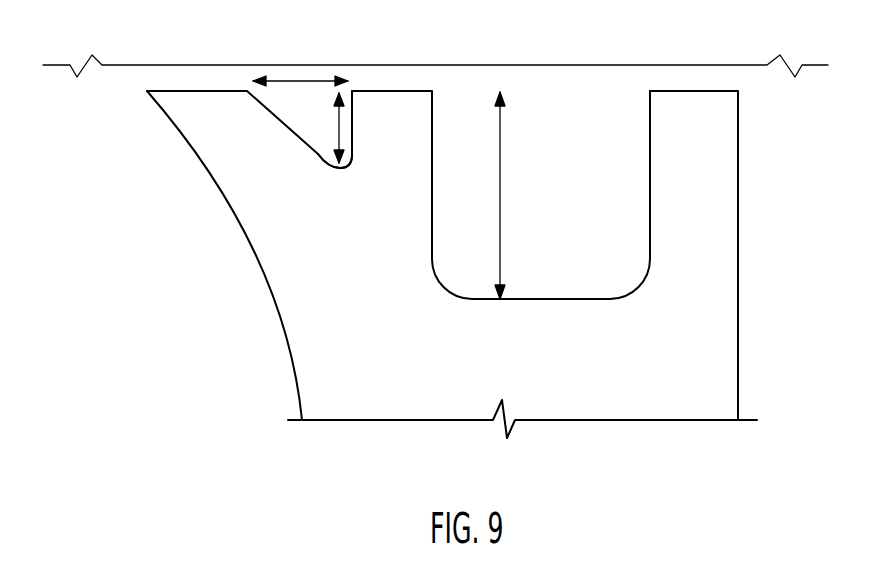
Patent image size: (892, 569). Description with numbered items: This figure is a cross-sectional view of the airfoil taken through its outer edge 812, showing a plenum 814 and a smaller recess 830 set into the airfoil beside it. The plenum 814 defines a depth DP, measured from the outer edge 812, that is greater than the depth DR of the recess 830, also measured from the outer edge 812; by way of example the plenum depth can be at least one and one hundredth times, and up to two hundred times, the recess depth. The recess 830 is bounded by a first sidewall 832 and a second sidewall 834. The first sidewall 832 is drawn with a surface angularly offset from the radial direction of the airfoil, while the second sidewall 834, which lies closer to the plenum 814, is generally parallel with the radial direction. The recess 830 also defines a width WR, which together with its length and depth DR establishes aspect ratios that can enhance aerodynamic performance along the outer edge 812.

The outer edge 812 is at (665, 91).
The plenum 814 is at (587, 243).
The recess 830 is at (290, 107).
The first sidewall 832 is at (278, 120).
The second sidewall 834 is at (352, 137).
The relative width of the recess WR is at (322, 81).
The depth of the recess DR is at (338, 138).
The depth of the plenum DP is at (500, 165).